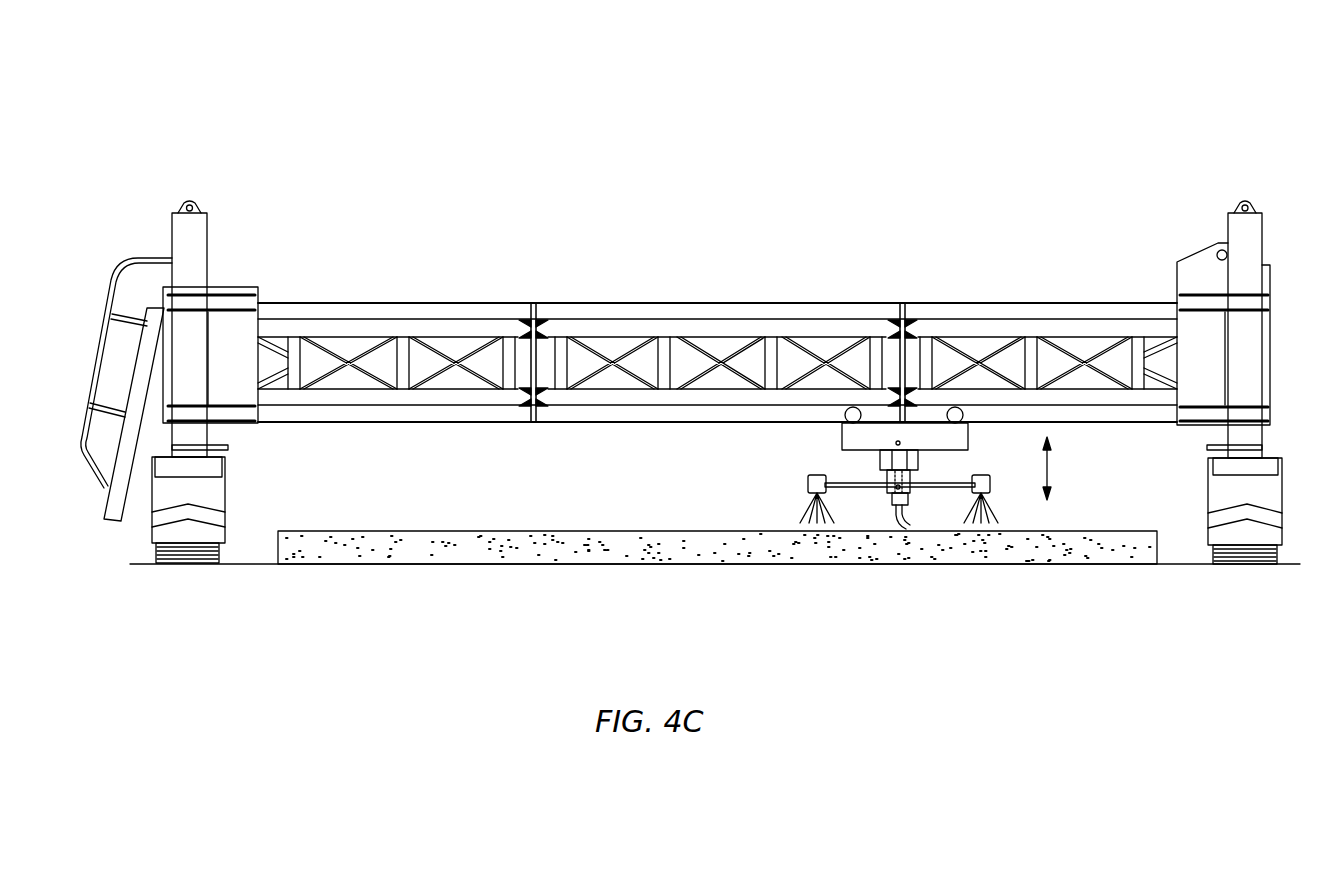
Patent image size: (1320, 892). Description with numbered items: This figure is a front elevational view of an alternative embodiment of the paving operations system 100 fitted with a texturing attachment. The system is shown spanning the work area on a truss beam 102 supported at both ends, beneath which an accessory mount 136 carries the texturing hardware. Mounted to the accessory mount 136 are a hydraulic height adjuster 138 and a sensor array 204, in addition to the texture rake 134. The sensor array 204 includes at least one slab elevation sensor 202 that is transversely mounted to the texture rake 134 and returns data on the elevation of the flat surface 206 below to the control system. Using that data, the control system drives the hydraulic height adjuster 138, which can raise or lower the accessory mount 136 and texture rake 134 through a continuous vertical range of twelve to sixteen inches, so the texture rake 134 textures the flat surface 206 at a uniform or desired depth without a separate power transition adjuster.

The paving operations system 100 is at (315, 165).
The gantry truss beam 102 is at (375, 303).
The texture rake 134 is at (893, 515).
The accessory mount 136 is at (843, 435).
The hydraulic height adjuster 138 is at (900, 462).
The slab elevation sensor 202 is at (807, 486).
The sensor array 204 is at (935, 490).
The flat surface 206 is at (457, 547).